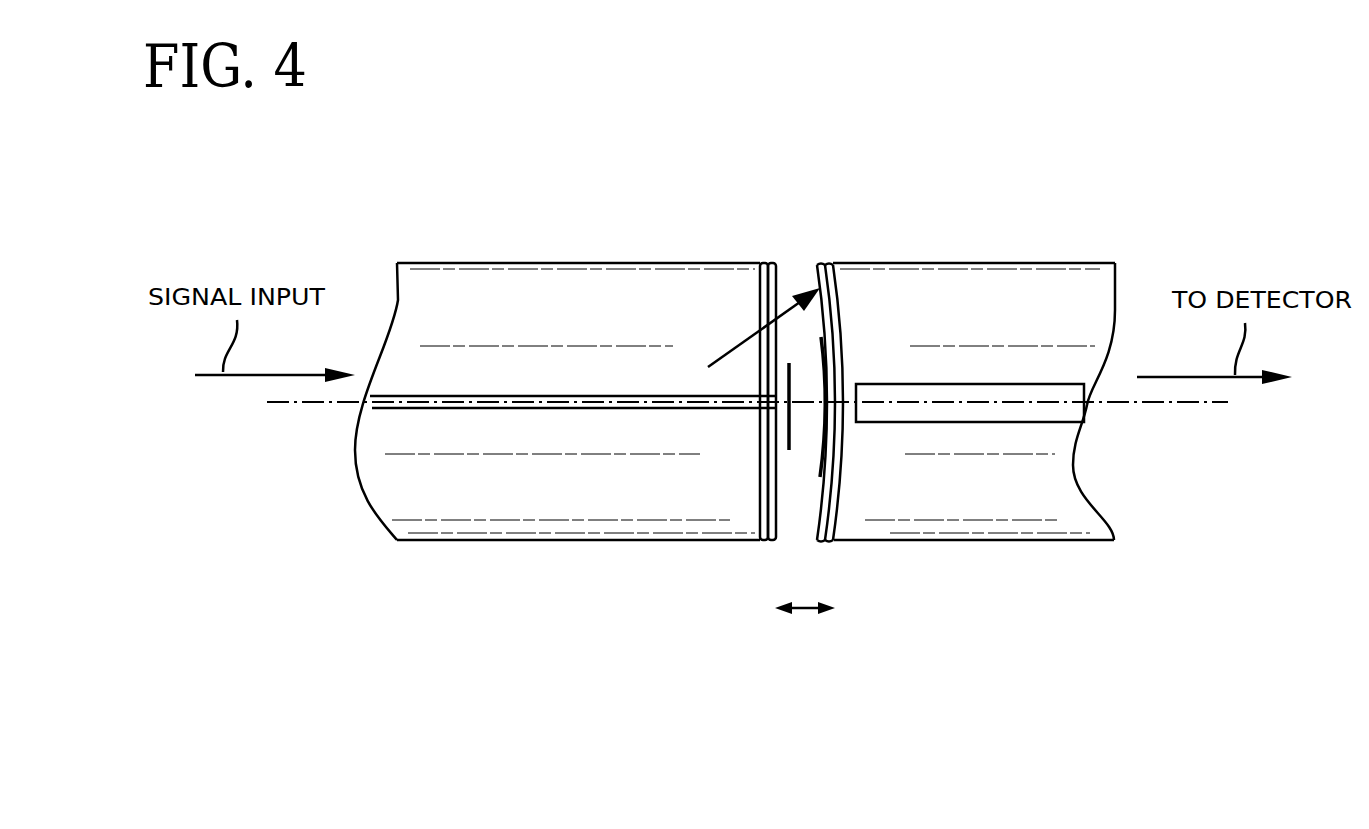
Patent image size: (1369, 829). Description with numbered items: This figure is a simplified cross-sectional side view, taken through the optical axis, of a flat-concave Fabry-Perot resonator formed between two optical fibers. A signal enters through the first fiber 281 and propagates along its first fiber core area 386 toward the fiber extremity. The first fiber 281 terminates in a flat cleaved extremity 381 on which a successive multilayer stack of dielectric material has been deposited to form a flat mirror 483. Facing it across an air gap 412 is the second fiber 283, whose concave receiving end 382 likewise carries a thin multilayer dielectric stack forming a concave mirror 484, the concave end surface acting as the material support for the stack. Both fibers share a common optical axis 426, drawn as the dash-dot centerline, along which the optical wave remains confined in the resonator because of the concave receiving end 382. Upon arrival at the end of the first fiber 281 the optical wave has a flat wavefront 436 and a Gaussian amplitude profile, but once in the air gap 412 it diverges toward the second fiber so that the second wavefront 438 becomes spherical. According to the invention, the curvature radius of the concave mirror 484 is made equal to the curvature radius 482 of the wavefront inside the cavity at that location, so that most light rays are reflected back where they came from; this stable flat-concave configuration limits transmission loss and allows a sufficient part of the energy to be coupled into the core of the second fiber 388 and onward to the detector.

The first fiber 281 is at (440, 295).
The output optical fiber 283 is at (1083, 290).
The flat cleaved extremity of the first fiber 381 is at (763, 263).
The concave receiving end of the second fiber 382 is at (827, 263).
The first fiber core area 386 is at (548, 408).
The core of the second fiber 388 is at (1033, 422).
The air gap 412 is at (805, 612).
The optical axis 426 is at (277, 403).
The flat wavefront 436 is at (789, 433).
The second wavefront 438 is at (823, 462).
The curvature radius of the wavefront 482 is at (716, 355).
The flat mirror 483 is at (775, 263).
The concave mirror 484 is at (820, 263).